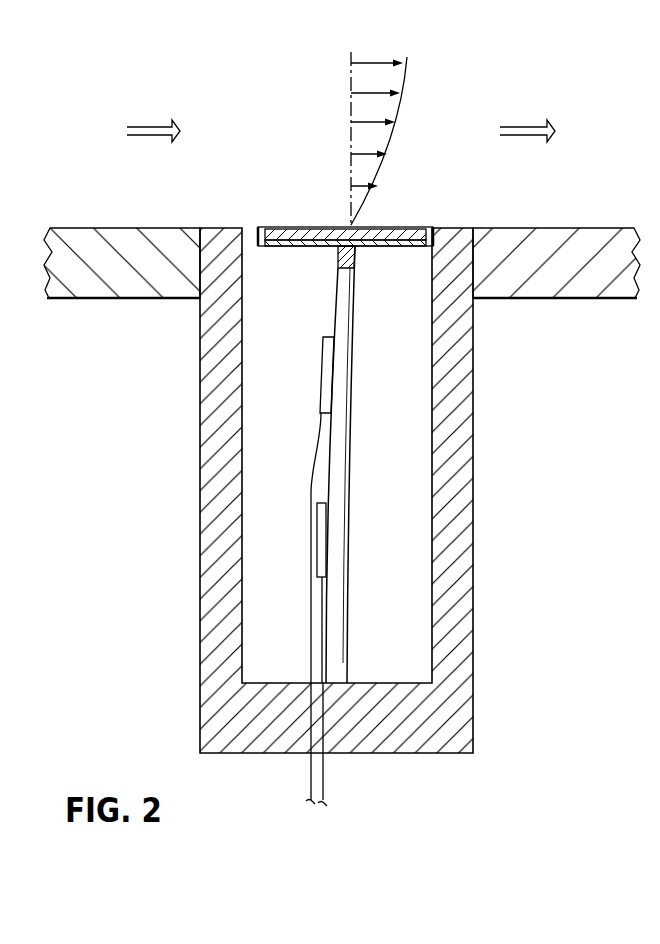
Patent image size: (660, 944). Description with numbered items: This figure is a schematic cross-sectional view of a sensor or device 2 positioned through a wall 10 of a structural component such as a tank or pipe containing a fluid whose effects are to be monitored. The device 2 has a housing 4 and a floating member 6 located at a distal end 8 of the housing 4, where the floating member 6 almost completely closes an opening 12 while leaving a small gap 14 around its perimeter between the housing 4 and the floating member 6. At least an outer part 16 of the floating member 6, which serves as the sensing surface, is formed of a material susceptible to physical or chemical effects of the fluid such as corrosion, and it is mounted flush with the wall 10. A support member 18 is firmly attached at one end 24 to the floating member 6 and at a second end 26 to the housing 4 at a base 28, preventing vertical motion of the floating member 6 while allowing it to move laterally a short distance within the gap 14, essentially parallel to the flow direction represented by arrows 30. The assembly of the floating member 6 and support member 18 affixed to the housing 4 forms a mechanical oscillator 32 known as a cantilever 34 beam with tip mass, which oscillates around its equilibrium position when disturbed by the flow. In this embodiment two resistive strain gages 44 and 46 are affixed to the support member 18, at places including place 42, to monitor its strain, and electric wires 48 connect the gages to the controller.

The sensor 2 is at (144, 644).
The housing 4 is at (200, 463).
The floating member 6 is at (289, 247).
The distal end 8 is at (216, 227).
The wall 10 is at (103, 227).
The opening 12 is at (252, 252).
The gap 14 is at (248, 225).
The outer part 16 is at (310, 227).
The support member 18 is at (346, 439).
The one end 24 is at (356, 252).
The second end 26 is at (343, 676).
The base 28 is at (462, 718).
The arrows 30 is at (351, 120).
The mechanical oscillator 32 is at (429, 182).
The cantilever 34 is at (394, 212).
The place 42 is at (319, 552).
The strain gage 44 is at (322, 373).
The strain gage 46 is at (311, 544).
The wires 48 is at (291, 782).